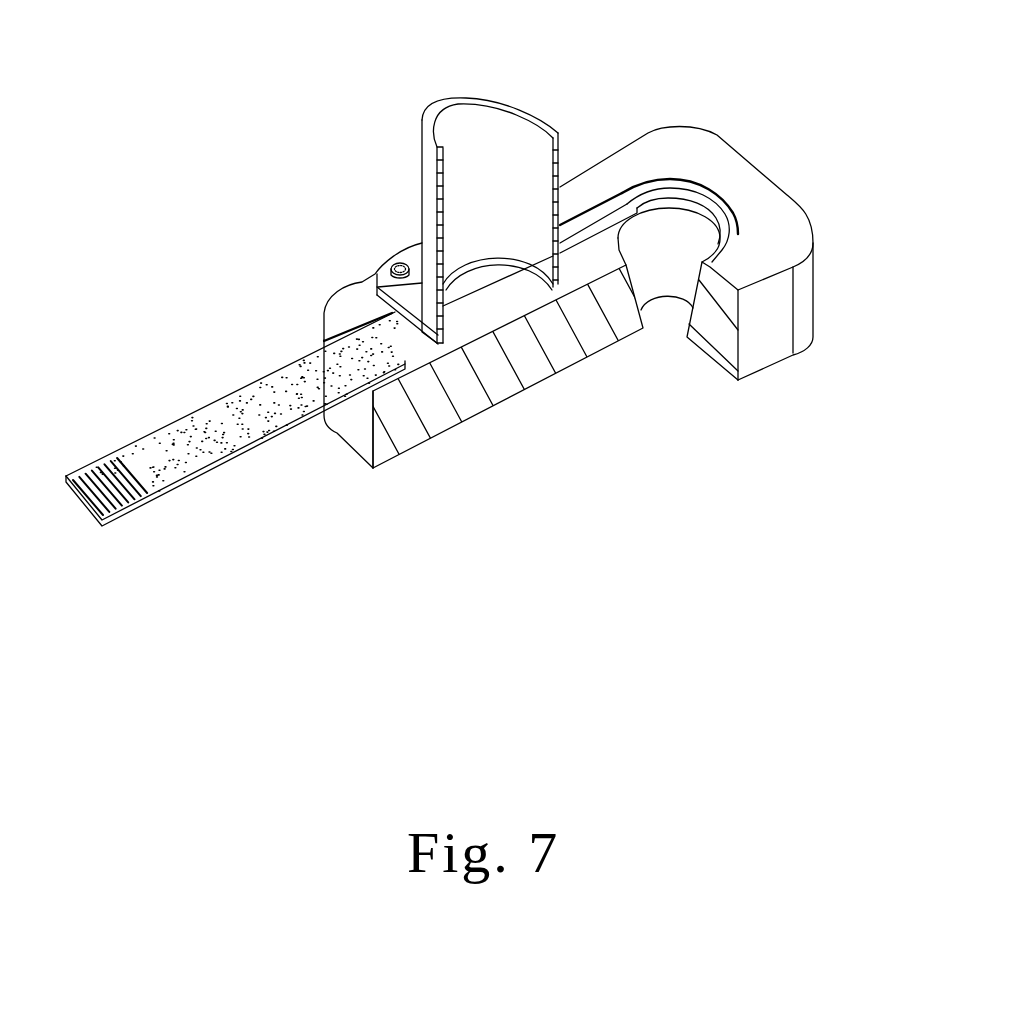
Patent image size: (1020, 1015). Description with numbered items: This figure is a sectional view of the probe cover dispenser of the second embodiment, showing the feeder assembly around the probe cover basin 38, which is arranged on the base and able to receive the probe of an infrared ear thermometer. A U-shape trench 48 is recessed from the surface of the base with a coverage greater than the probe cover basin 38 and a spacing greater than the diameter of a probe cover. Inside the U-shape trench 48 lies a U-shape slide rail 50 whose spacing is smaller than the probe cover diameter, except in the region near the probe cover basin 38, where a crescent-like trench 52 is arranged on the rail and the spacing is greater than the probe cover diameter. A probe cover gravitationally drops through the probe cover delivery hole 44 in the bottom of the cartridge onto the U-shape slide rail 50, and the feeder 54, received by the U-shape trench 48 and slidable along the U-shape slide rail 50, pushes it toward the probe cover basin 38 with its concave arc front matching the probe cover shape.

The probe cover basin 38 is at (680, 263).
The probe cover delivery hole 44 is at (478, 277).
The U-shape trench 48 is at (588, 205).
The U-shape slide rail 50 is at (582, 222).
The crescent-like trench 52 is at (712, 207).
The feeder 54 is at (248, 400).